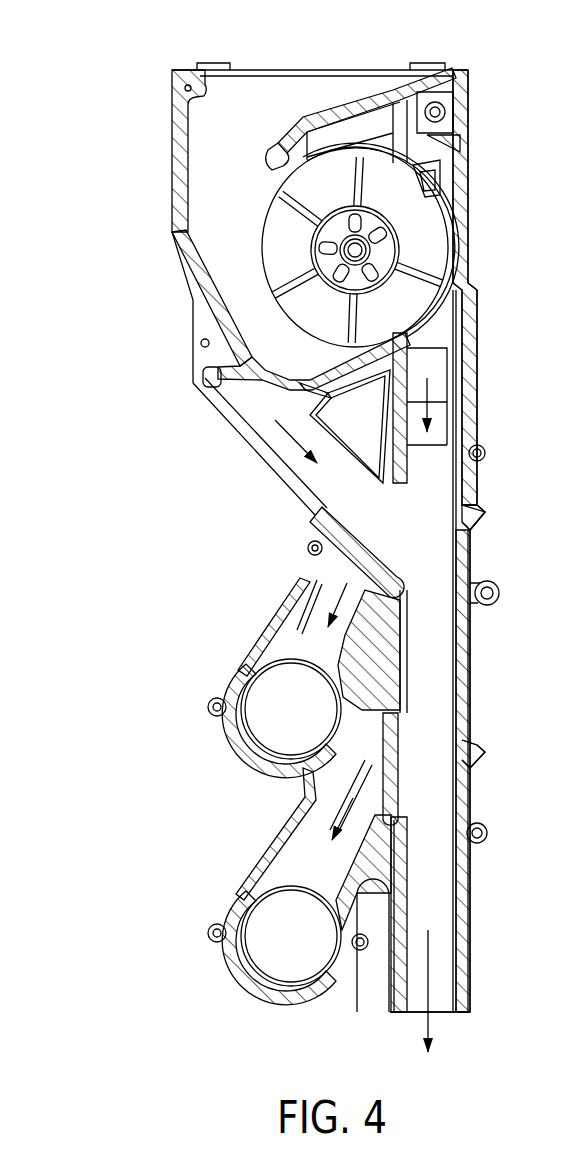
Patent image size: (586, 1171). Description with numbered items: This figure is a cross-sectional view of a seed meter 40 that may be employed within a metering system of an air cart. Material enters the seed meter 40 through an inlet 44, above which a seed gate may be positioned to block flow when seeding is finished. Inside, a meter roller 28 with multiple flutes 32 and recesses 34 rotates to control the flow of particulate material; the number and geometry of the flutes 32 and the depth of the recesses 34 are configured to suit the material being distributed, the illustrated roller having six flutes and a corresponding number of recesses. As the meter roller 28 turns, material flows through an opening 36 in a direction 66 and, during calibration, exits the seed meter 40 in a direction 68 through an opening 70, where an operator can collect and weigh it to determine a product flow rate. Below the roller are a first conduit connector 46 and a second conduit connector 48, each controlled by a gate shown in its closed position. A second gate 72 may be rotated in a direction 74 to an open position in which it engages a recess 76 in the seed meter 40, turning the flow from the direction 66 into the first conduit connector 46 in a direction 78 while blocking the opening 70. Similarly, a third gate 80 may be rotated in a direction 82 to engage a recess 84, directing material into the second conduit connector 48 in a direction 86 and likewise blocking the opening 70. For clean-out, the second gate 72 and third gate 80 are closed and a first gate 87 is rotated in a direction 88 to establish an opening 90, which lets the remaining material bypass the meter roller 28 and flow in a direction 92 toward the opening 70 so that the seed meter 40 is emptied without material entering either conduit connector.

The meter roller 28 is at (390, 197).
The flutes 32 is at (362, 205).
The recesses 34 is at (345, 235).
The opening 36 is at (433, 330).
The seed meter 40 is at (102, 235).
The inlet 44 is at (288, 117).
The first conduit connector 46 is at (242, 688).
The second conduit connector 48 is at (327, 972).
The direction 66 is at (430, 414).
The direction 68 is at (428, 970).
The opening 70 is at (450, 1007).
The second gate 72 is at (337, 571).
The direction 74 is at (407, 553).
The recess 76 is at (465, 508).
The direction 78 is at (340, 600).
The third gate 80 is at (400, 787).
The direction 82 is at (427, 770).
The recess 84 is at (470, 732).
The direction 86 is at (318, 812).
The first gate 87 is at (210, 372).
The direction 88 is at (192, 458).
The opening 90 is at (275, 362).
The direction 92 is at (252, 445).